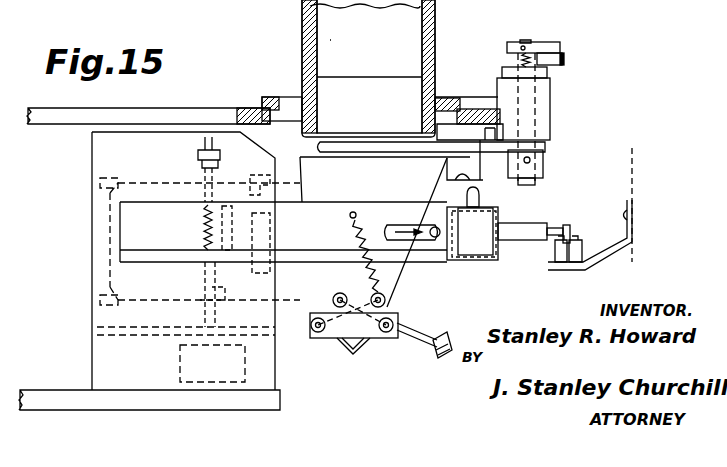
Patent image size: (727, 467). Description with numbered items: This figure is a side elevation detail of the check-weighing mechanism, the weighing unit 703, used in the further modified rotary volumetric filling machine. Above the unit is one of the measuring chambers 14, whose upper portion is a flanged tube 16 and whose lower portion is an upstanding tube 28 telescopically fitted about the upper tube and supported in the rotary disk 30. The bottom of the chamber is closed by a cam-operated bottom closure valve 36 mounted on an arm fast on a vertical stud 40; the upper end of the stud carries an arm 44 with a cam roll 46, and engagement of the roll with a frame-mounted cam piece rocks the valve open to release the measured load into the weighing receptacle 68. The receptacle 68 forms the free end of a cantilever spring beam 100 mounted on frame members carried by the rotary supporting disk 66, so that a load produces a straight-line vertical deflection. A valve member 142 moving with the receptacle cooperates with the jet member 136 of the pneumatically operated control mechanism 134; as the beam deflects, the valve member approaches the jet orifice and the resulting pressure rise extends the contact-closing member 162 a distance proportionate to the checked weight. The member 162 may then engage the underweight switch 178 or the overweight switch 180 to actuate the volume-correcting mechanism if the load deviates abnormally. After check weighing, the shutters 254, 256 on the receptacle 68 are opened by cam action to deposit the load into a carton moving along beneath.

The measuring chamber 14 is at (357, 52).
The flanged tube 16 is at (317, 33).
The upstanding tube 28 is at (312, 97).
The rotary disk 30 is at (202, 107).
The bottom closure valve 36 is at (362, 137).
The vertical stud 40 is at (525, 42).
The arm 44 is at (548, 42).
The cam roll 46 is at (565, 60).
The rotary supporting disk 66 is at (205, 395).
The weighing receptacle 68 is at (400, 277).
The cantilever spring beam 100 is at (157, 178).
The pneumatically operated control mechanism 134 is at (515, 245).
The jet member 136 is at (481, 197).
The valve member 142 is at (445, 172).
The contact-closing member 162 is at (567, 222).
The underweight circuit-closing switch 178 is at (558, 256).
The overweight circuit-closing switch 180 is at (575, 266).
The shutter 254 is at (343, 343).
The shutter 256 is at (377, 345).
The weighing unit 703 is at (567, 177).